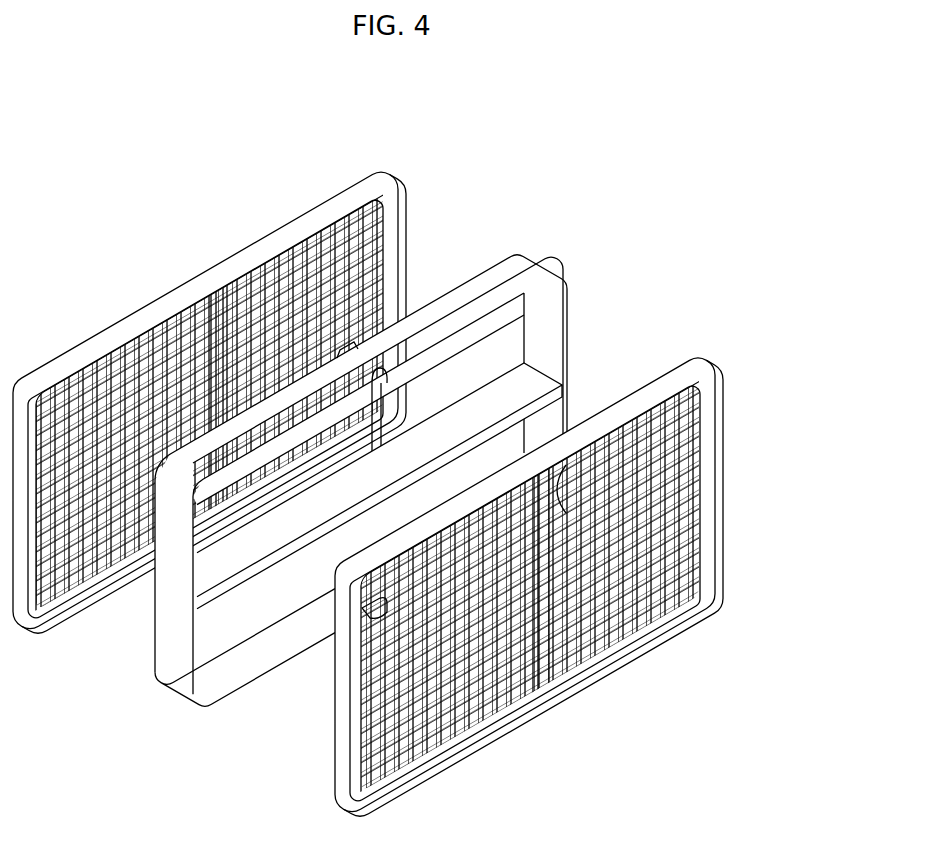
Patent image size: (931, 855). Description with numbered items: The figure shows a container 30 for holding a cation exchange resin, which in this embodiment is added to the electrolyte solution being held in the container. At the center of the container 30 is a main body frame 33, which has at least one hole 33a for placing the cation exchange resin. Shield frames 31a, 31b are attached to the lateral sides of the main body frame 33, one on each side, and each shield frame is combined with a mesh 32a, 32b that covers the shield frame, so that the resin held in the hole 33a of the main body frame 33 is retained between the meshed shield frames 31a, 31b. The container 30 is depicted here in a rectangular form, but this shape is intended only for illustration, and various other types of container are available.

The container 30 is at (625, 111).
The shield frame 31a is at (392, 160).
The mesh 32a is at (331, 246).
The main body frame 33 is at (528, 268).
The hole 33a is at (231, 636).
The shield frame 31b is at (706, 362).
The mesh 32b is at (685, 531).